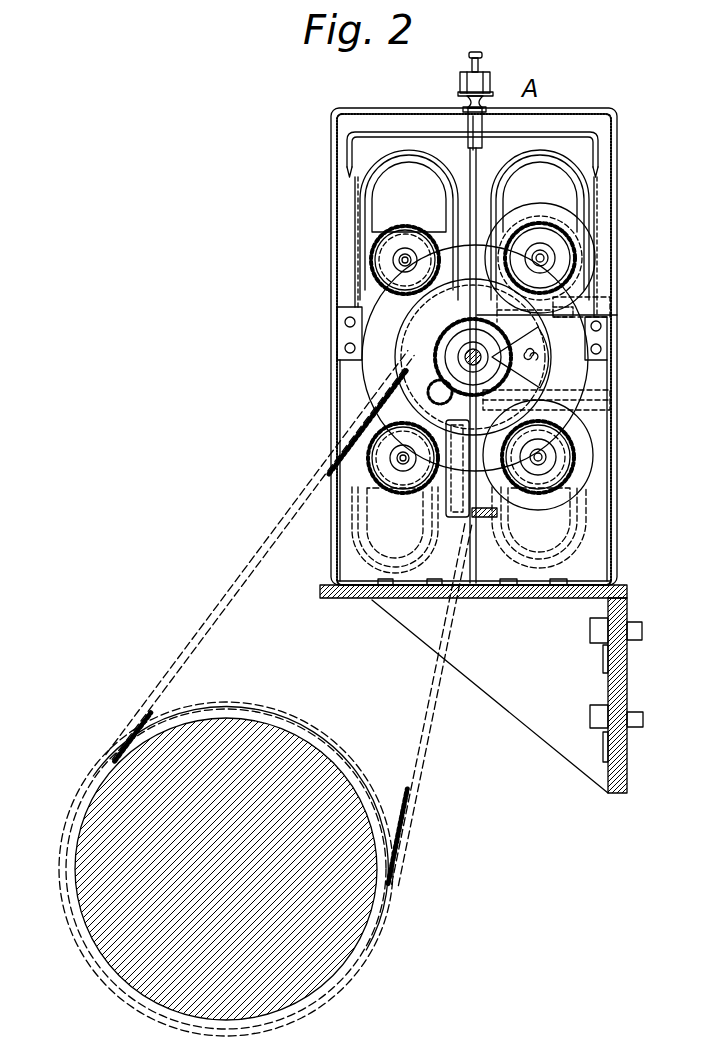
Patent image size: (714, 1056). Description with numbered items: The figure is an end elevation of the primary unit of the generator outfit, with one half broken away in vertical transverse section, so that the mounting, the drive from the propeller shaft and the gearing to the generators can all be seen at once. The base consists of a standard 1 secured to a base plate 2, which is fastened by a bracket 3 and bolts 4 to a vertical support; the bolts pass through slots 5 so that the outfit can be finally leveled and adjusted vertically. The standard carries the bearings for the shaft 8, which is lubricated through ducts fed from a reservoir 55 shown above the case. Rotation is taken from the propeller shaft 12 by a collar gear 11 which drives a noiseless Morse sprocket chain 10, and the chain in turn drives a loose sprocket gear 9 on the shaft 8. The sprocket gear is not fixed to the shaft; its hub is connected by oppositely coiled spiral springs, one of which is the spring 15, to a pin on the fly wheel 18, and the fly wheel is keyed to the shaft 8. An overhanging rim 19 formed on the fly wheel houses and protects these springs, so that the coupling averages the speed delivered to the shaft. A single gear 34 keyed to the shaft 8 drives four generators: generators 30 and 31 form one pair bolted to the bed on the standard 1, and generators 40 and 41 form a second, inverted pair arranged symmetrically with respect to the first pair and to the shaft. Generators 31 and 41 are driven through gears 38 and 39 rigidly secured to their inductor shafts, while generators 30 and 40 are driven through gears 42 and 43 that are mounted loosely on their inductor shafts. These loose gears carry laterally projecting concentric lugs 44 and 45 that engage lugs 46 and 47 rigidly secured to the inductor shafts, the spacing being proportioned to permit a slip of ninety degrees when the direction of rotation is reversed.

The standard 1 is at (461, 521).
The base plate 2 is at (488, 598).
The bracket 3 is at (625, 675).
The bolts 4 is at (626, 630).
The slots 5 is at (607, 657).
The shaft 8 is at (520, 357).
The sprocket gear 9 is at (459, 365).
The sprocket chain 10 is at (373, 413).
The collar gear 11 is at (373, 813).
The propeller shaft 12 is at (95, 849).
The spiral spring 15 is at (440, 318).
The fly wheel 18 is at (347, 343).
The overhanging rim 19 is at (373, 368).
The generator 30 is at (590, 180).
The generator 31 is at (348, 179).
The gear 34 is at (607, 342).
The gear 38 is at (372, 262).
The gear 39 is at (403, 475).
The generator 40 is at (578, 516).
The generator 41 is at (363, 538).
The gear 42 is at (575, 262).
The gear 43 is at (590, 270).
The lug 44 is at (560, 238).
The lug 45 is at (598, 295).
The lug 46 is at (566, 250).
The lug 47 is at (505, 252).
The reservoir 55 is at (461, 79).